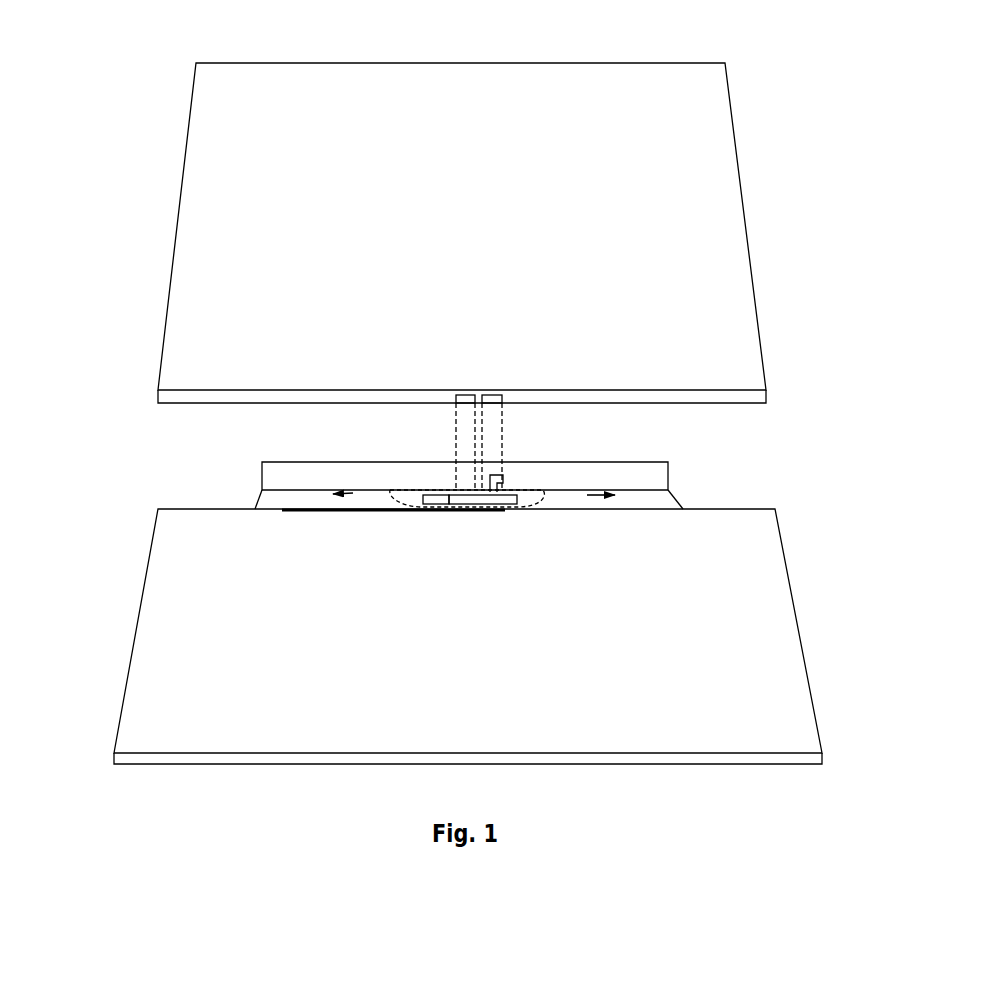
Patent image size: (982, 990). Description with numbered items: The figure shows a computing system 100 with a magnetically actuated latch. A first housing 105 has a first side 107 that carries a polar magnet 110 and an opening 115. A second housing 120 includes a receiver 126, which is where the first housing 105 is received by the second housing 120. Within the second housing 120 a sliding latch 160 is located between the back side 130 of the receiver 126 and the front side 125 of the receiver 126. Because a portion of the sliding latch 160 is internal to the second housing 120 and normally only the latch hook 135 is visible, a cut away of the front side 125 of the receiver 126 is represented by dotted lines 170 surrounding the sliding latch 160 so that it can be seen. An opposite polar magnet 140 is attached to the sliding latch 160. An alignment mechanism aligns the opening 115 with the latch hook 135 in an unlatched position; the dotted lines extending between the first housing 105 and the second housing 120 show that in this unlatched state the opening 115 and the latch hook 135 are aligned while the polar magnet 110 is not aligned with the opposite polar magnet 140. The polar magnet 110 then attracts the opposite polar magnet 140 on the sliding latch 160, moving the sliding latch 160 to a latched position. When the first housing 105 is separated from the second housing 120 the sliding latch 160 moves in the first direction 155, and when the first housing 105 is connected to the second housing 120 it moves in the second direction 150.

The computing system 100 is at (163, 107).
The first housing 105 is at (215, 183).
The first side 107 is at (178, 395).
The polar magnet 110 is at (456, 398).
The opening 115 is at (502, 398).
The second housing 120 is at (170, 518).
The front side of the receiver 125 is at (278, 499).
The receiver 126 is at (676, 478).
The back side of the receiver 130 is at (308, 480).
The latch hook 135 is at (503, 480).
The opposite polar magnet 140 is at (427, 489).
The second direction 150 is at (603, 490).
The first direction 155 is at (351, 492).
The sliding latch 160 is at (517, 498).
The dotted lines 170 is at (397, 498).